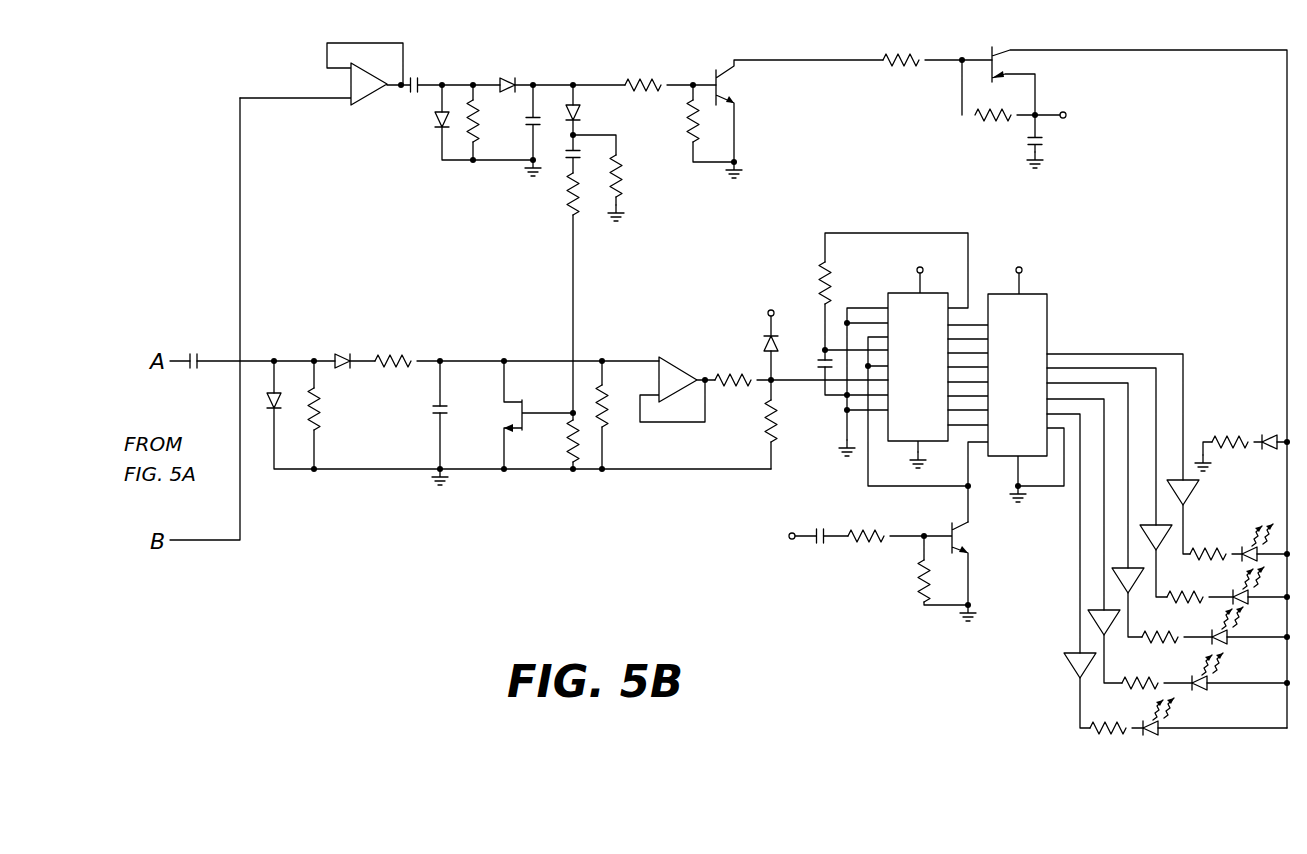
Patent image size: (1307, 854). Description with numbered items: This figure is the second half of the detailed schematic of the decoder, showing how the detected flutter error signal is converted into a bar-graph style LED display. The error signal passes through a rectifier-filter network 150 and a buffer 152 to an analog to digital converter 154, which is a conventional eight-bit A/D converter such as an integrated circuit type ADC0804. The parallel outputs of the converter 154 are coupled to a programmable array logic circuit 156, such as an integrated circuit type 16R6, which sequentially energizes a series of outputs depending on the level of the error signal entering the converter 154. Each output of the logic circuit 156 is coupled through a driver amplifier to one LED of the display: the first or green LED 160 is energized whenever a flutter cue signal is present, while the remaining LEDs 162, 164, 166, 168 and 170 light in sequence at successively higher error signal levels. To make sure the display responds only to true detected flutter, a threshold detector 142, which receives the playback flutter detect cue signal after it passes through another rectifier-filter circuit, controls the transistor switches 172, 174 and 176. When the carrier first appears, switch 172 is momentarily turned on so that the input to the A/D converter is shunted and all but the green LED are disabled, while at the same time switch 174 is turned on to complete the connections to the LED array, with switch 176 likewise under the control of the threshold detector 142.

The threshold detector 142 is at (448, 216).
The rectifier-filter network 150 is at (519, 449).
The buffer 152 is at (675, 363).
The analog to digital converter 154 is at (900, 293).
The programmable array logic circuit 156 is at (1041, 294).
The first or green LED 160 is at (1264, 434).
The LED 162 is at (1244, 546).
The LED 164 is at (1233, 590).
The LED 166 is at (1222, 642).
The LED 168 is at (1204, 690).
The LED 170 is at (1155, 736).
The transistor switch 172 is at (514, 402).
The transistor switch 174 is at (727, 68).
The transistor switch 176 is at (990, 54).